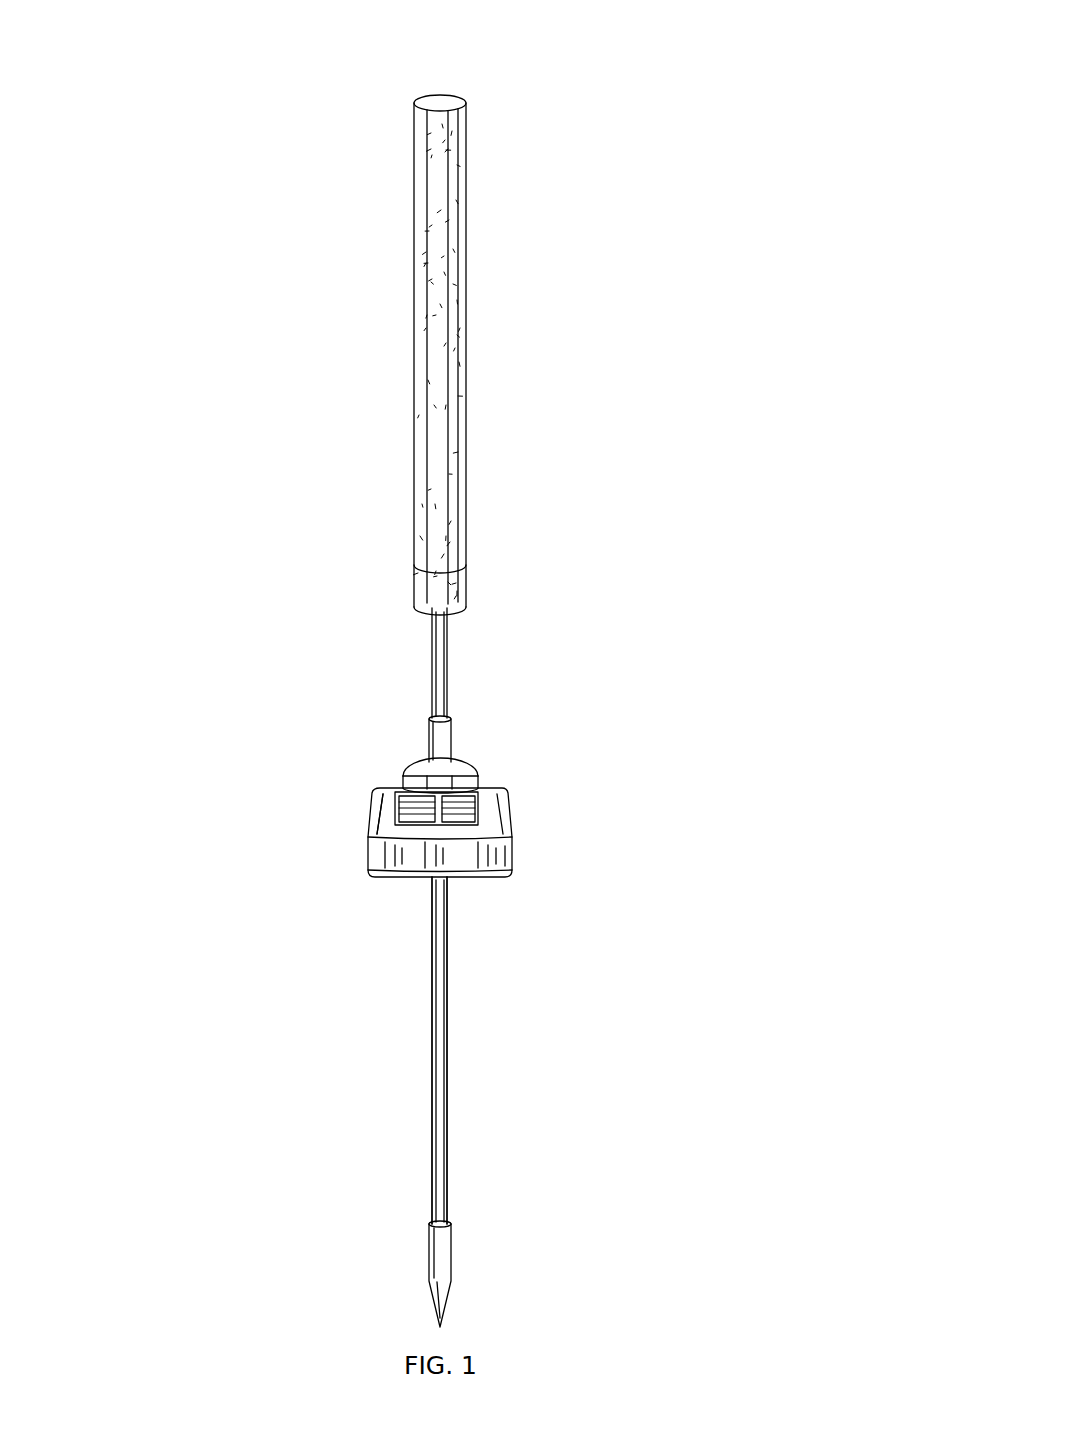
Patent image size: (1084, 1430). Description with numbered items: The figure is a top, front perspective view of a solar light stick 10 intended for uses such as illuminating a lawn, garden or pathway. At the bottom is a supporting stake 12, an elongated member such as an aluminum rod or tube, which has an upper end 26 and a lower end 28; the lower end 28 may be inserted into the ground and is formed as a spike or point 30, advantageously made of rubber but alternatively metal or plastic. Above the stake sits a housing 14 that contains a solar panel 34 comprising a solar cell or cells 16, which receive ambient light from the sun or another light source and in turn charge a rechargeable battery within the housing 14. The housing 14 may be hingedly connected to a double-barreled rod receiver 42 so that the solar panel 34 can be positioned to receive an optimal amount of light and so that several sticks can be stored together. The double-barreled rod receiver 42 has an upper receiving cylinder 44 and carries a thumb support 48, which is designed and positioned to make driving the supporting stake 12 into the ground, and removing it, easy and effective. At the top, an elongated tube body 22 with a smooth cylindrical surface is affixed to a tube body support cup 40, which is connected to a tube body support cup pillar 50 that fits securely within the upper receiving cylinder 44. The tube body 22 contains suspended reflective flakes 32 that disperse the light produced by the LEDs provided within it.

The solar light stick 10 is at (290, 208).
The supporting stake 12 is at (432, 1068).
The housing 14 is at (500, 808).
The solar cell or cells 16 is at (468, 818).
The tube body 22 is at (437, 130).
The upper end 26 is at (447, 924).
The lower end 28 is at (441, 1210).
The spike or point 30 is at (444, 1256).
The reflective flakes 32 is at (436, 455).
The solar panel 34 is at (393, 820).
The tube body support cup 40 is at (440, 592).
The double-barreled rod receiver 42 is at (450, 760).
The upper receiving cylinder 44 is at (438, 737).
The thumb support 48 is at (422, 768).
The tube body support cup pillar 50 is at (440, 664).